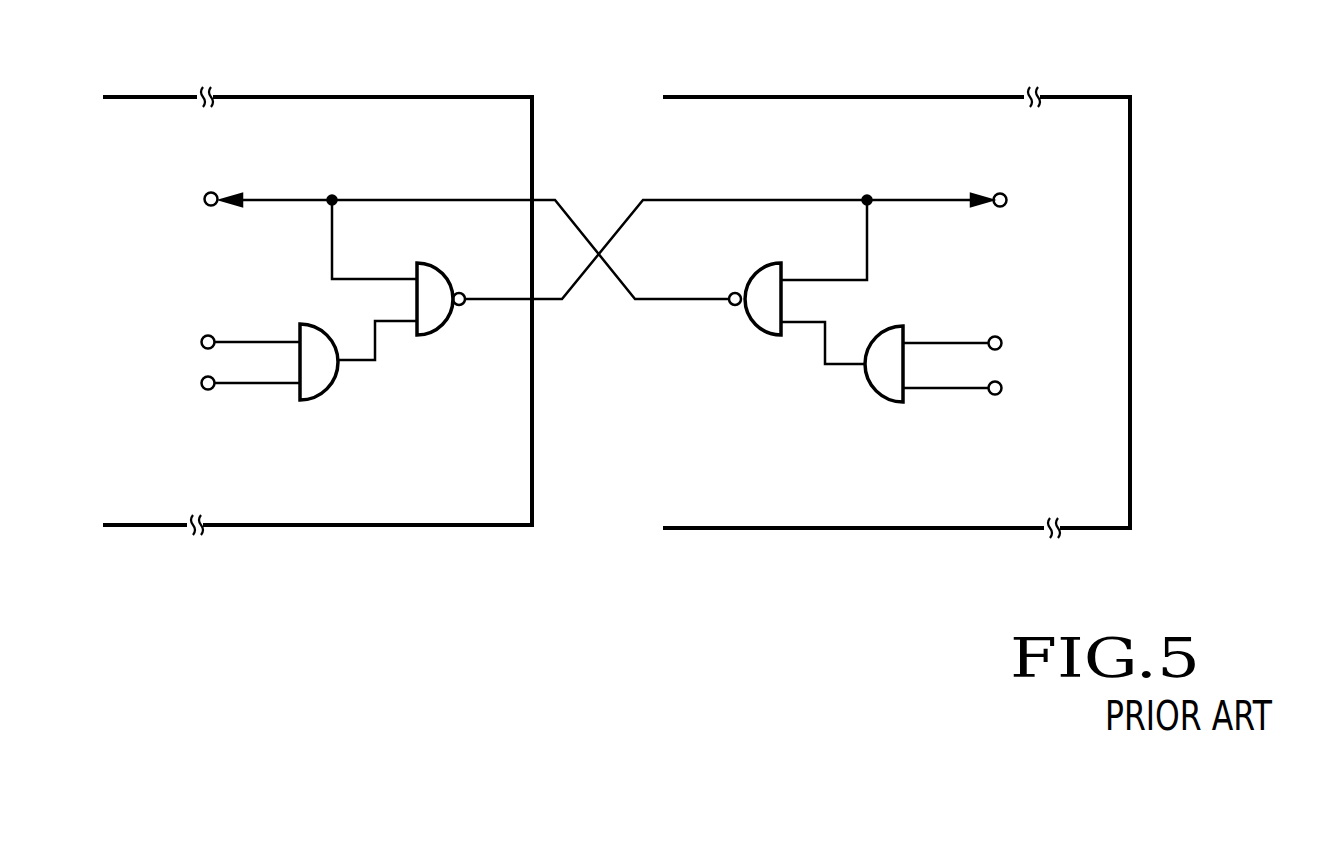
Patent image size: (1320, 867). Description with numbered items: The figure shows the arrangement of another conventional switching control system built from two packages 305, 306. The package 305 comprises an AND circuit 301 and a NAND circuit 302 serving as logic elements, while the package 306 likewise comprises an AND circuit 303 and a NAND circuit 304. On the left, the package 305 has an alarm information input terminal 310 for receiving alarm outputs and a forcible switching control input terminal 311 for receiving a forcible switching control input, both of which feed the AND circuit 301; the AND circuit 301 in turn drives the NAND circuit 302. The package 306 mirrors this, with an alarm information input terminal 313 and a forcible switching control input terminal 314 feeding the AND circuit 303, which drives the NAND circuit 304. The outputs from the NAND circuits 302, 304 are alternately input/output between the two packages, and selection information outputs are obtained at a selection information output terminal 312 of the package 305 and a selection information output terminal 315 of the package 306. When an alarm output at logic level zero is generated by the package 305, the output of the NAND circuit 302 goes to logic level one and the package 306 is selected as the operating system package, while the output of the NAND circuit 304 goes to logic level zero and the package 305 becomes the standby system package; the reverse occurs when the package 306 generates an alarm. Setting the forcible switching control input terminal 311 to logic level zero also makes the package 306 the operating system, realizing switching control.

The AND circuit 301 is at (330, 401).
The NAND circuit 302 is at (454, 278).
The AND circuit 303 is at (881, 401).
The NAND circuit 304 is at (747, 279).
The package 305 is at (253, 93).
The package 306 is at (813, 95).
The alarm information input terminal 310 is at (201, 344).
The forcible switching control input terminal 311 is at (201, 385).
The selection information output terminal 312 is at (204, 200).
The alarm information input terminal 313 is at (1003, 343).
The forcible switching control input terminal 314 is at (1003, 388).
The selection information output terminal 315 is at (1008, 200).